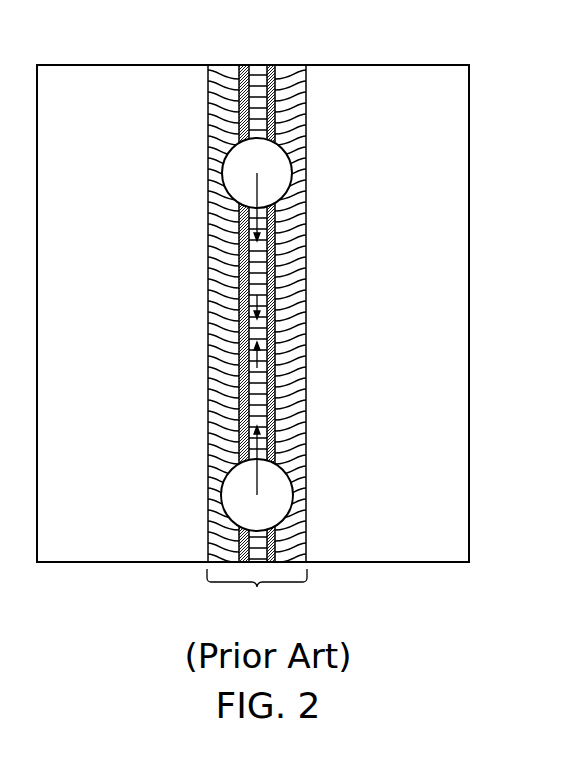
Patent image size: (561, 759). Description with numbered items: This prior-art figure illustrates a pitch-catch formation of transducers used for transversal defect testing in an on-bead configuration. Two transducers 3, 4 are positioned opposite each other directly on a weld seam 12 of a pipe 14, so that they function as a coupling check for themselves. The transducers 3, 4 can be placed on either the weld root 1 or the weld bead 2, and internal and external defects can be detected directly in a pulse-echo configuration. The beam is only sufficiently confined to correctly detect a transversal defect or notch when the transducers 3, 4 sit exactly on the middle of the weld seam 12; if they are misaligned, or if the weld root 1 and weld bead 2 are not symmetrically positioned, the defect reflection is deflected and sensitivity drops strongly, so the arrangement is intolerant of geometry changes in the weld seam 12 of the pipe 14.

The weld root 1 is at (287, 284).
The weld bead 2 is at (305, 95).
The transducer 3 is at (208, 518).
The transducer 4 is at (208, 163).
The weld seam 12 is at (257, 590).
The pipe 14 is at (455, 383).